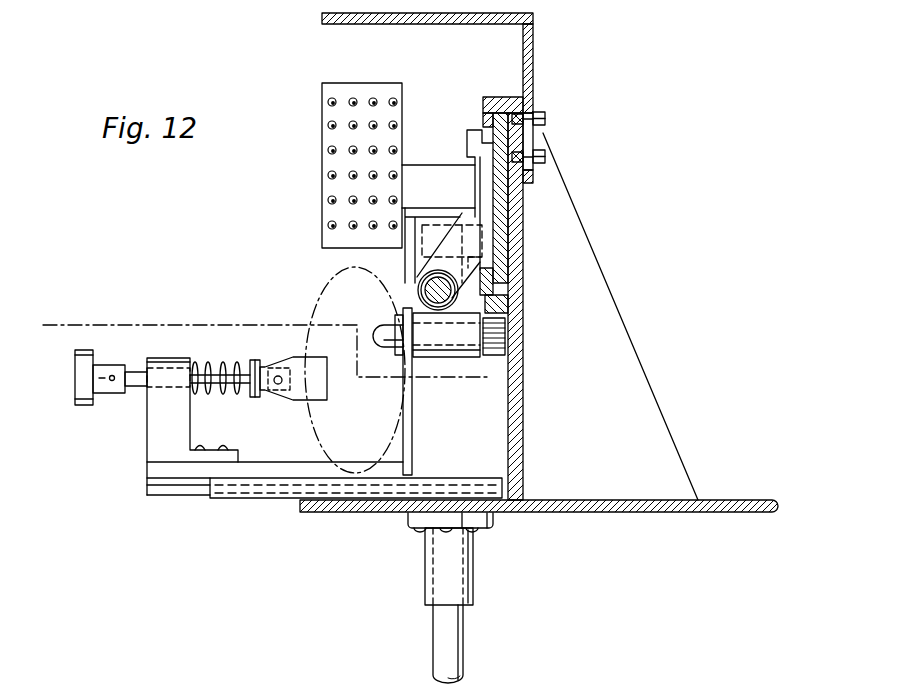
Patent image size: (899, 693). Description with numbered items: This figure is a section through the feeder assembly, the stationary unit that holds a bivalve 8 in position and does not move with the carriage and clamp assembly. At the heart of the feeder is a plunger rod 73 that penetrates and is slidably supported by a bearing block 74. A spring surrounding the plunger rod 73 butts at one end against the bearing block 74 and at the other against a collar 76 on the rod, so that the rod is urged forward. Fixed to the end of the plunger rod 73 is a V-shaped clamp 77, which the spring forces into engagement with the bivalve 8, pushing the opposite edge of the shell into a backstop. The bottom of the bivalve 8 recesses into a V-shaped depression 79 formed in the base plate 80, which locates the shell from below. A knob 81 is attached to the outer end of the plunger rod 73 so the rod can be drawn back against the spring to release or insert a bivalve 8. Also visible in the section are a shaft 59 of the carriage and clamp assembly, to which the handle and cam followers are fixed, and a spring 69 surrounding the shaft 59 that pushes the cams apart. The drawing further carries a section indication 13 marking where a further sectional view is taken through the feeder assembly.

The bivalve 8 is at (322, 296).
The section line 13- 13 is at (43, 325).
The shaft 59 is at (436, 289).
The spring 69 is at (421, 277).
The plunger rod 73 is at (134, 373).
The bearing block 74 is at (153, 438).
The collar 76 is at (254, 398).
The V-shaped clamp 77 is at (300, 401).
The V-shaped depression 79 is at (292, 504).
The base plate 80 is at (153, 472).
The knob 81 is at (82, 406).